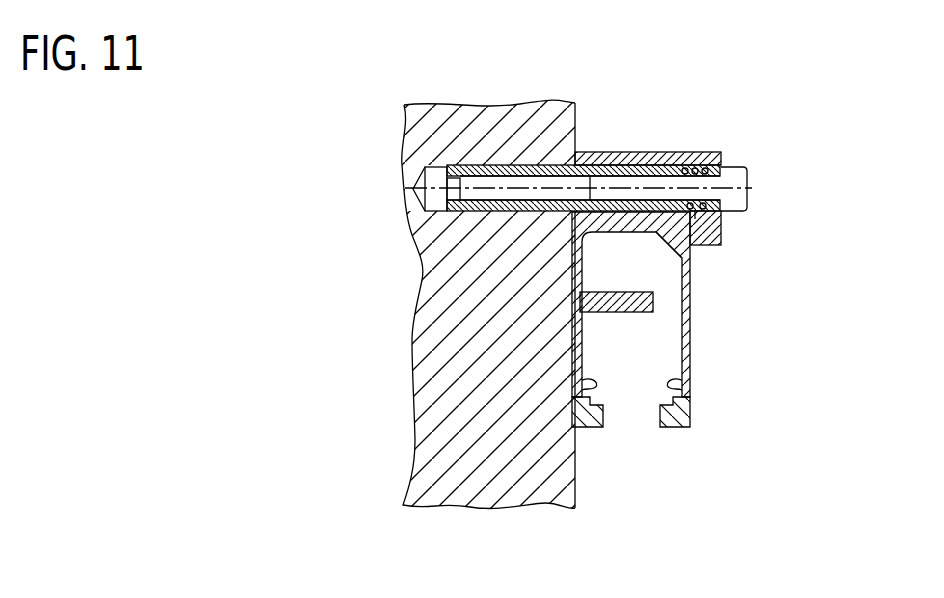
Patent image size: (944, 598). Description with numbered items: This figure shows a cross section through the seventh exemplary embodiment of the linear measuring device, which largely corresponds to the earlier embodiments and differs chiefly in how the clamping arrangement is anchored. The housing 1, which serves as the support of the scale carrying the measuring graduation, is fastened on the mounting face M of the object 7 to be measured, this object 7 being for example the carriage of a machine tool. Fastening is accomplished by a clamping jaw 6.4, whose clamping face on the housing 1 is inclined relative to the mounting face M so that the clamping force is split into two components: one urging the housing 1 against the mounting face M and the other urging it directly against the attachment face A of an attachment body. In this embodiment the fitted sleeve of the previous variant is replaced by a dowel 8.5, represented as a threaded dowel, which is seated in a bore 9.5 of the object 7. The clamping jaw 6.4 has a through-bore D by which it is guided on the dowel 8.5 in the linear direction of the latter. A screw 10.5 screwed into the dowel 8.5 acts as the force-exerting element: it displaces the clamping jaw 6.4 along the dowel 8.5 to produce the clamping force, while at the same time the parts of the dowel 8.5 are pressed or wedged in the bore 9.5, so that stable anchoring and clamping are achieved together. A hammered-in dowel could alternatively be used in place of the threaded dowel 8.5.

The object to be measured 7 is at (440, 478).
The bore 9.5 is at (474, 166).
The dowel 8.5 is at (532, 165).
The clamping jaw 6.4 is at (625, 152).
The through-bore D is at (687, 152).
The screw 10.5 is at (741, 166).
The housing 1 is at (688, 412).
The attachment face A is at (658, 234).
The mounting face M is at (580, 475).